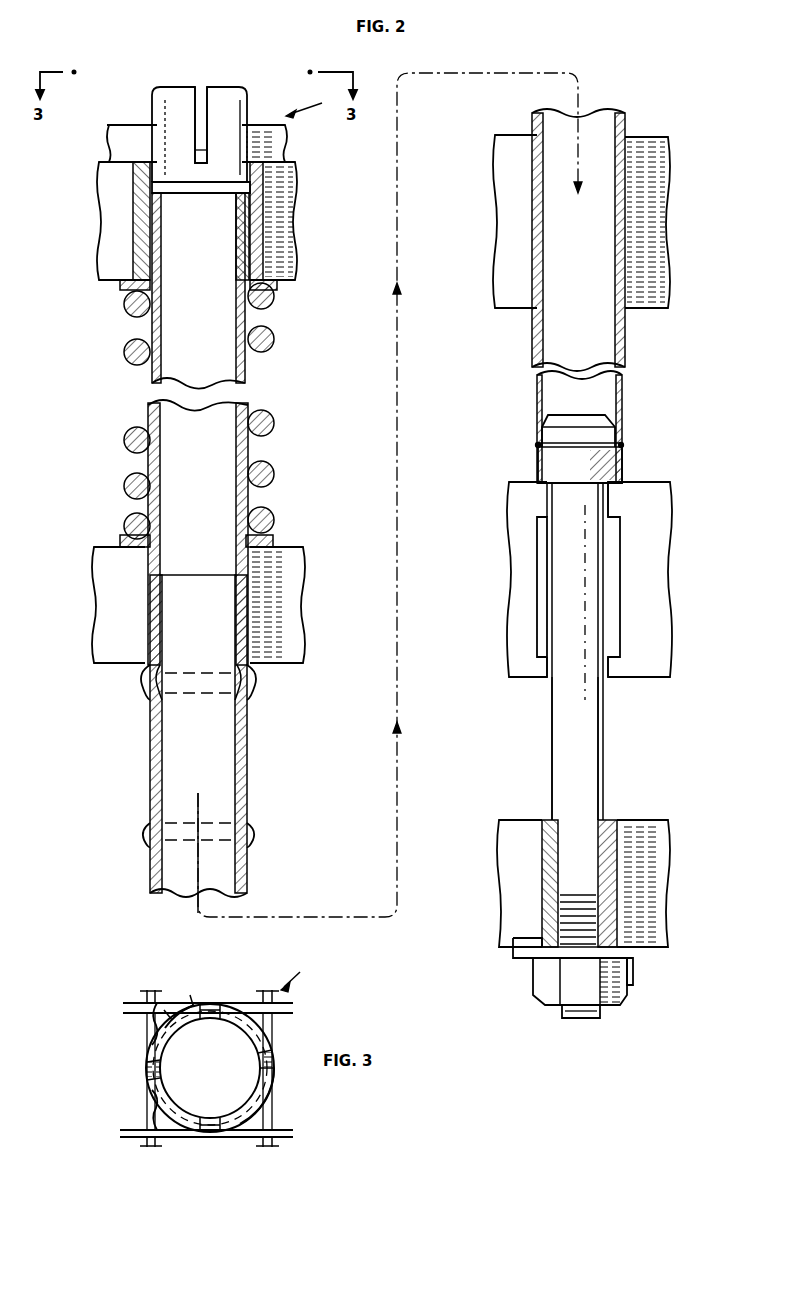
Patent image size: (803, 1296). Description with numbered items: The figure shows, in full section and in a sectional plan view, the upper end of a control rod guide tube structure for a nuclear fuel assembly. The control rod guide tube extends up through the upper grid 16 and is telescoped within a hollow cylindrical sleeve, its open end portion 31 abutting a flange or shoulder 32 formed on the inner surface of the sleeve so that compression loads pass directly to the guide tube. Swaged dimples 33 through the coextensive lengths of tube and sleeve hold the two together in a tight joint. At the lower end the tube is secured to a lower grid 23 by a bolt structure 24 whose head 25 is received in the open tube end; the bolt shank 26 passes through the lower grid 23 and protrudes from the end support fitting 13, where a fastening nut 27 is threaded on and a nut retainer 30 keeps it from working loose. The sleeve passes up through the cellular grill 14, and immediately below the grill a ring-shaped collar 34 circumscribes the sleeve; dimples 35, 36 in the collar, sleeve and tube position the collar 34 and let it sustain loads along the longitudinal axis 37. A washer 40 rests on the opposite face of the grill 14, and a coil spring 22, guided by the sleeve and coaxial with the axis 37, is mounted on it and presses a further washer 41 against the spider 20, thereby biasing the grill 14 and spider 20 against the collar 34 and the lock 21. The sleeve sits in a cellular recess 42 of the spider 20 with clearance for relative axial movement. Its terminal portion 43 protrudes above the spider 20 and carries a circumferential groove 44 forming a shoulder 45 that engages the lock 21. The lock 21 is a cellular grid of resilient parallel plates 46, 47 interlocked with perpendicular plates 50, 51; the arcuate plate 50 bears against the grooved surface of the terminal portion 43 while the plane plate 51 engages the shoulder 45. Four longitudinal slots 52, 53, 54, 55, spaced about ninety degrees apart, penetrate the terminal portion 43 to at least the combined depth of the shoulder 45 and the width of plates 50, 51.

In FIG. 2, the end support fitting 13 is at (660, 848).
In FIG. 2, the grill 14 is at (110, 620).
In FIG. 2, the upper grid 16 is at (650, 228).
In FIG. 2, the spider 20 is at (285, 218).
In FIG. 2, the control rod guide tube assembly lock 21 is at (311, 104).
In FIG. 3, the control rod guide tube assembly lock 21 is at (302, 975).
In FIG. 2, the coil spring 22 is at (124, 440).
In FIG. 2, the lower grid 23 is at (652, 508).
In FIG. 2, the bolt structure 24 is at (588, 594).
In FIG. 2, the head 25 is at (580, 430).
In FIG. 2, the bolt shank 26 is at (603, 732).
In FIG. 2, the fastening nut 27 is at (620, 1000).
In FIG. 2, the nut retainer 30 is at (616, 947).
In FIG. 2, the open end portion 31 is at (188, 577).
In FIG. 2, the shoulder 32 is at (256, 592).
In FIG. 2, the dimples 33 is at (250, 832).
In FIG. 2, the collar 34 is at (258, 692).
In FIG. 2, the dimples 35 is at (138, 688).
In FIG. 2, the dimples 36 is at (238, 688).
In FIG. 2, the longitudinal axis 37 is at (198, 825).
In FIG. 2, the washer 40 is at (275, 540).
In FIG. 2, the washer 41 is at (277, 285).
In FIG. 2, the cellular recess 42 is at (247, 240).
In FIG. 2, the terminal portion 43 is at (164, 86).
In FIG. 3, the terminal portion 43 is at (190, 1004).
In FIG. 2, the circumferential groove 44 is at (153, 143).
In FIG. 3, the circumferential groove 44 is at (162, 1020).
In FIG. 2, the shoulder 45 is at (153, 127).
In FIG. 3, the resilient parallel plate 46 is at (294, 1135).
In FIG. 3, the resilient parallel plate 47 is at (290, 1008).
In FIG. 2, the plate 50 is at (135, 163).
In FIG. 3, the plate 50 is at (148, 1072).
In FIG. 2, the plate 51 is at (268, 146).
In FIG. 3, the plate 51 is at (270, 1110).
In FIG. 3, the longitudinal slot 52 is at (210, 1140).
In FIG. 3, the longitudinal slot 53 is at (272, 1058).
In FIG. 2, the longitudinal slot 54 is at (200, 86).
In FIG. 3, the longitudinal slot 54 is at (218, 1004).
In FIG. 3, the longitudinal slot 55 is at (150, 1065).